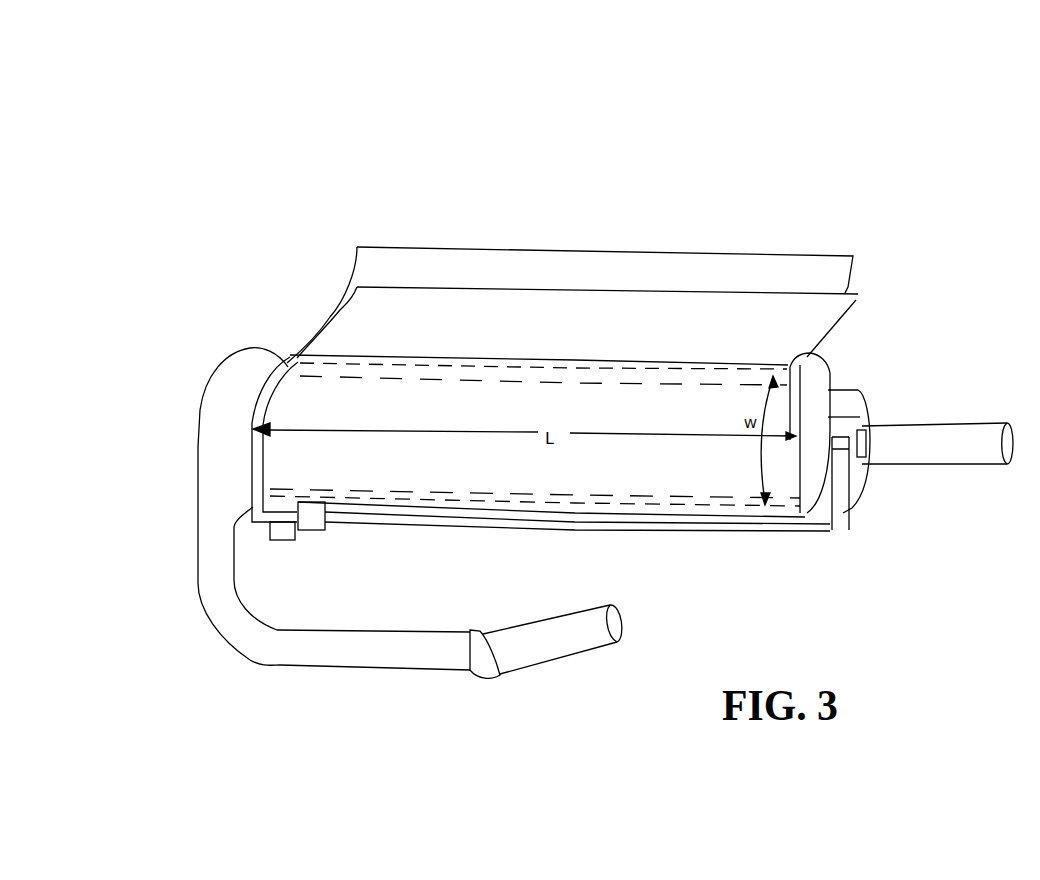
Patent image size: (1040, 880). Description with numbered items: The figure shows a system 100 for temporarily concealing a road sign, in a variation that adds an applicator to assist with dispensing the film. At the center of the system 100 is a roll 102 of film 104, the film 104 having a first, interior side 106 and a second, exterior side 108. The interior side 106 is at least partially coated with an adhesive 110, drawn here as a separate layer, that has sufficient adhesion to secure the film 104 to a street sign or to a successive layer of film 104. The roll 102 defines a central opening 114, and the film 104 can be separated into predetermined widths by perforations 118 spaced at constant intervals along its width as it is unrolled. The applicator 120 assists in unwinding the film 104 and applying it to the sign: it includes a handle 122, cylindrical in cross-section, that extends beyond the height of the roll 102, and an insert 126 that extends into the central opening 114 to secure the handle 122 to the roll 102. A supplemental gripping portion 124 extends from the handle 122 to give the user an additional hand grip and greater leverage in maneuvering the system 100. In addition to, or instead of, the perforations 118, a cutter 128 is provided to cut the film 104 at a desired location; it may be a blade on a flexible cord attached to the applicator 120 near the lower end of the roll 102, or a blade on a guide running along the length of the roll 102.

The system 100 is at (260, 112).
The roll 102 is at (827, 383).
The film 104 is at (838, 255).
The interior side 106 is at (360, 262).
The exterior side 108 is at (790, 482).
The adhesive 110 is at (853, 314).
The central opening 114 is at (877, 418).
The perforations 118 is at (820, 390).
The applicator 120 is at (353, 657).
The handle 122 is at (983, 455).
The supplemental gripping portion 124 is at (528, 655).
The insert 126 is at (847, 402).
The cutter 128 is at (318, 537).